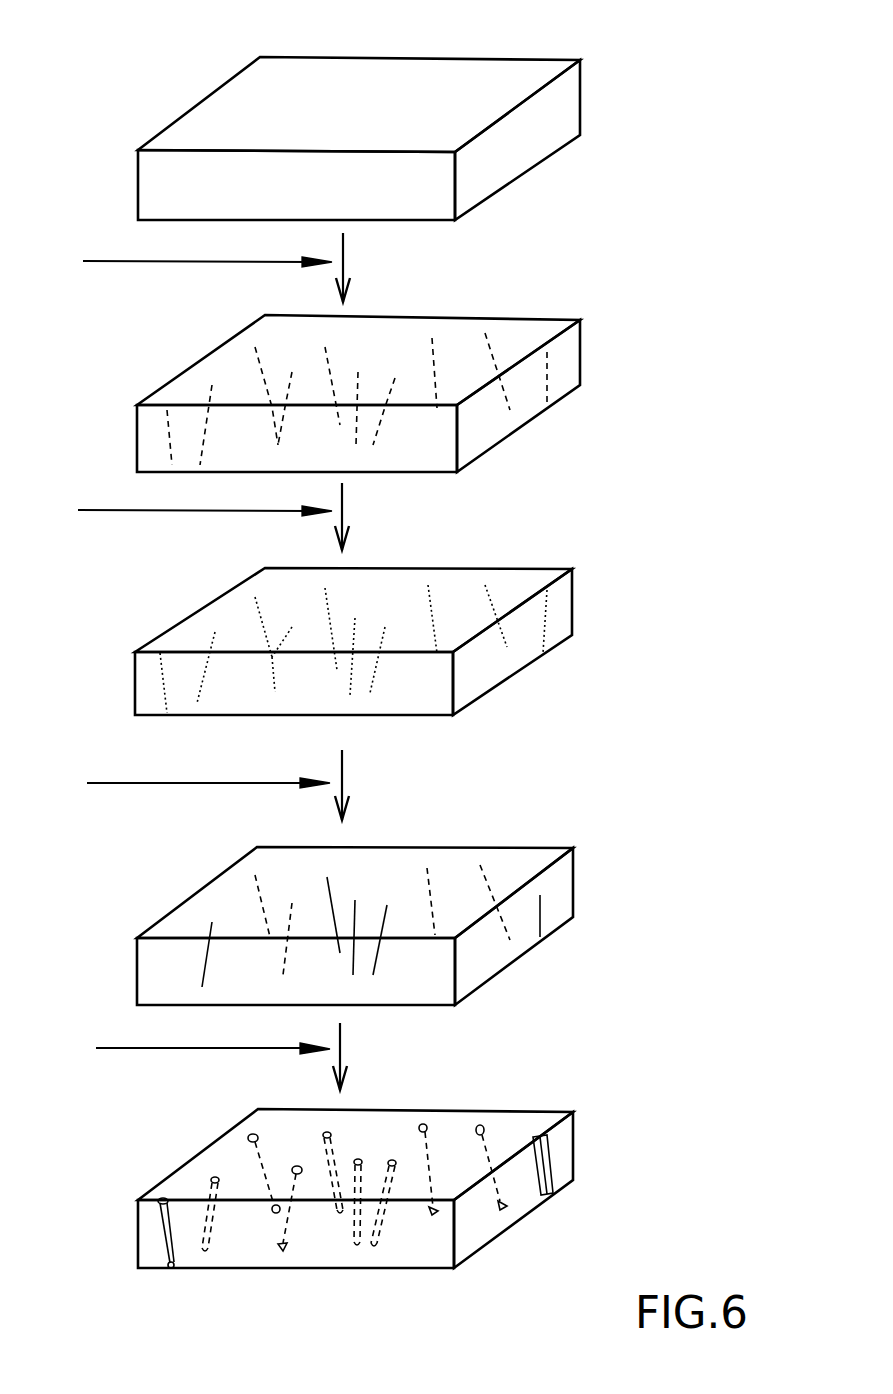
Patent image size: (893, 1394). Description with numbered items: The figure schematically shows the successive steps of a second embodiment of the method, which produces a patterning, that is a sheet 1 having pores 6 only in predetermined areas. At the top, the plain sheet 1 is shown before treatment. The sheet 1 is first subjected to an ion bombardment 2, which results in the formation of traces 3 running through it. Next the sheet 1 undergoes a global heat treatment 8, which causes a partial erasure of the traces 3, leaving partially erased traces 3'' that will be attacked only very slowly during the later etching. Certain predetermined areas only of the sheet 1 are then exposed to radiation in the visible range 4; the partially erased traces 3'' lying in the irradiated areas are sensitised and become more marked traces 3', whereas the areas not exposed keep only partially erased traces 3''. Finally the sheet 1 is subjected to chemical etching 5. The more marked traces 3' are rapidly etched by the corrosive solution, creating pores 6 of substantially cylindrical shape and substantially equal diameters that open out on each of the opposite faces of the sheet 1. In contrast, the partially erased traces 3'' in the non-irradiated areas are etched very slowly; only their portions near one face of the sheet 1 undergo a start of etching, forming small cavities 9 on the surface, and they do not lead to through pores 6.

The sheet 1 is at (174, 112).
The ion bombardment 2 is at (189, 267).
The traces 3 is at (387, 362).
The more marked traces 3' is at (385, 910).
The partially erased traces 3'' is at (385, 897).
The radiation in the visible range 4 is at (190, 785).
The chemical etching 5 is at (194, 1055).
The pores 6 is at (545, 1160).
The global heat treatment 8 is at (186, 515).
The small cavities 9 is at (428, 1128).